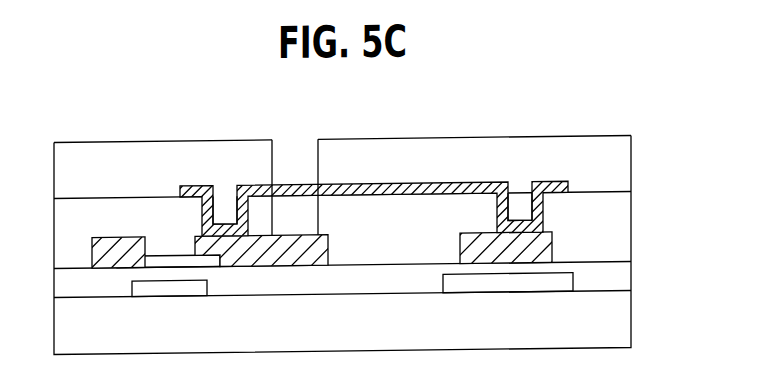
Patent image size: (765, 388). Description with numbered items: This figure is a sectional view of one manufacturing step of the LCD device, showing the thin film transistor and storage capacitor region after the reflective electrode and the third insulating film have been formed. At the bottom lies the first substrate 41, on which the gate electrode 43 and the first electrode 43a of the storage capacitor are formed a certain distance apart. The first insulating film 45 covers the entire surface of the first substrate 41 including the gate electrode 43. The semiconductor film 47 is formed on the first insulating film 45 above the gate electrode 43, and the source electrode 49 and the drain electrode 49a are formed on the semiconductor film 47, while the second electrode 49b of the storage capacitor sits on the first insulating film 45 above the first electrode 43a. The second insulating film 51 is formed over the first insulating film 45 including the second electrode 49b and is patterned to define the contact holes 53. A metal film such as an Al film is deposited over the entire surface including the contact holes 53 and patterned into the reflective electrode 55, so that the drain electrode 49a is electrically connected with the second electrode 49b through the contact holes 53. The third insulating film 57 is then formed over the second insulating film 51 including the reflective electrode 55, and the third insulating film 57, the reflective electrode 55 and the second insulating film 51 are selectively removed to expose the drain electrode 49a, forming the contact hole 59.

The first substrate 41 is at (631, 329).
The gate electrode 43 is at (172, 299).
The first electrode of storage capacitor 43a is at (523, 298).
The first insulating film 45 is at (631, 284).
The semiconductor film 47 is at (170, 257).
The source electrode 49 is at (95, 238).
The drain electrode 49a is at (329, 247).
The second electrode of storage capacitor 49b is at (553, 249).
The second insulating film 51 is at (631, 235).
The contact hole 53 is at (225, 200).
The reflective electrode 55 is at (413, 199).
The third insulating film 57 is at (631, 169).
The contact hole 59 is at (294, 155).